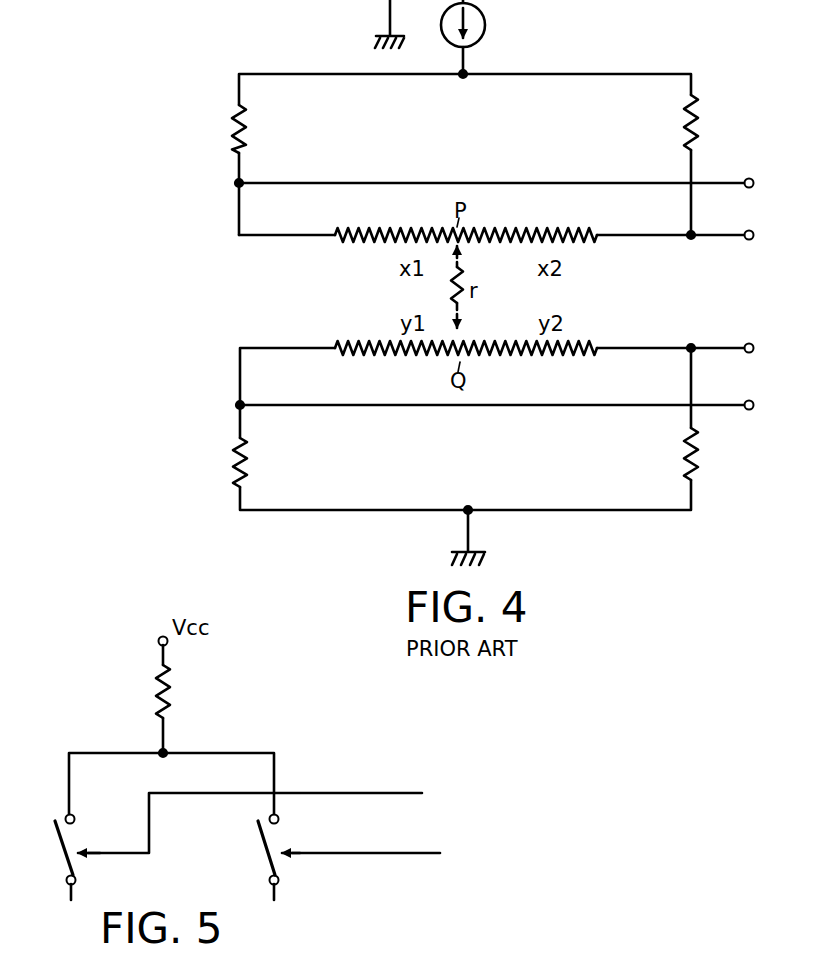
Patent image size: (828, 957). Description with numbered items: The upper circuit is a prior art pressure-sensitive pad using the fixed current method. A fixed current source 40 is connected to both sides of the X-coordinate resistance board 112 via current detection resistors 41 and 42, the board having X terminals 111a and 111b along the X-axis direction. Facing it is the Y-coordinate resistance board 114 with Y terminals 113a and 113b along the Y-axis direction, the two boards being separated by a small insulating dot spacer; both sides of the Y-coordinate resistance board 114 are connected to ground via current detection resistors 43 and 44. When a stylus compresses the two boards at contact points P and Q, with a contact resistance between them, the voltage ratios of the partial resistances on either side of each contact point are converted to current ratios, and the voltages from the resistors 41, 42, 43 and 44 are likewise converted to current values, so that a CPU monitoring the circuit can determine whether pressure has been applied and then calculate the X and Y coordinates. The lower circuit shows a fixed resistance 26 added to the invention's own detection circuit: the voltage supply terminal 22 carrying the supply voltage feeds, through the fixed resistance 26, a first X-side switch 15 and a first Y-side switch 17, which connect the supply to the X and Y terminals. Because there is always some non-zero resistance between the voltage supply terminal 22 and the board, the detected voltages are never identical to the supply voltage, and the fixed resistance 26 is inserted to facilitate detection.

In FIG. 4, the fixed current source 40 is at (485, 36).
In FIG. 4, the current detection resistor 41 is at (226, 128).
In FIG. 4, the current detection resistor 42 is at (700, 128).
In FIG. 4, the current detection resistor 43 is at (236, 468).
In FIG. 4, the current detection resistor 44 is at (698, 466).
In FIG. 4, the X terminal 111a is at (236, 184).
In FIG. 4, the X terminal 111b is at (689, 239).
In FIG. 4, the X-coordinate resistance board 112 is at (388, 248).
In FIG. 4, the Y terminal 113a is at (236, 406).
In FIG. 4, the Y terminal 113b is at (691, 344).
In FIG. 4, the Y-coordinate resistance board 114 is at (390, 343).
In FIG. 5, the voltage supply terminal 22 is at (158, 638).
In FIG. 5, the fixed resistance 26 is at (170, 694).
In FIG. 5, the first X-side switch 15 is at (62, 855).
In FIG. 5, the first Y-side switch 17 is at (268, 843).